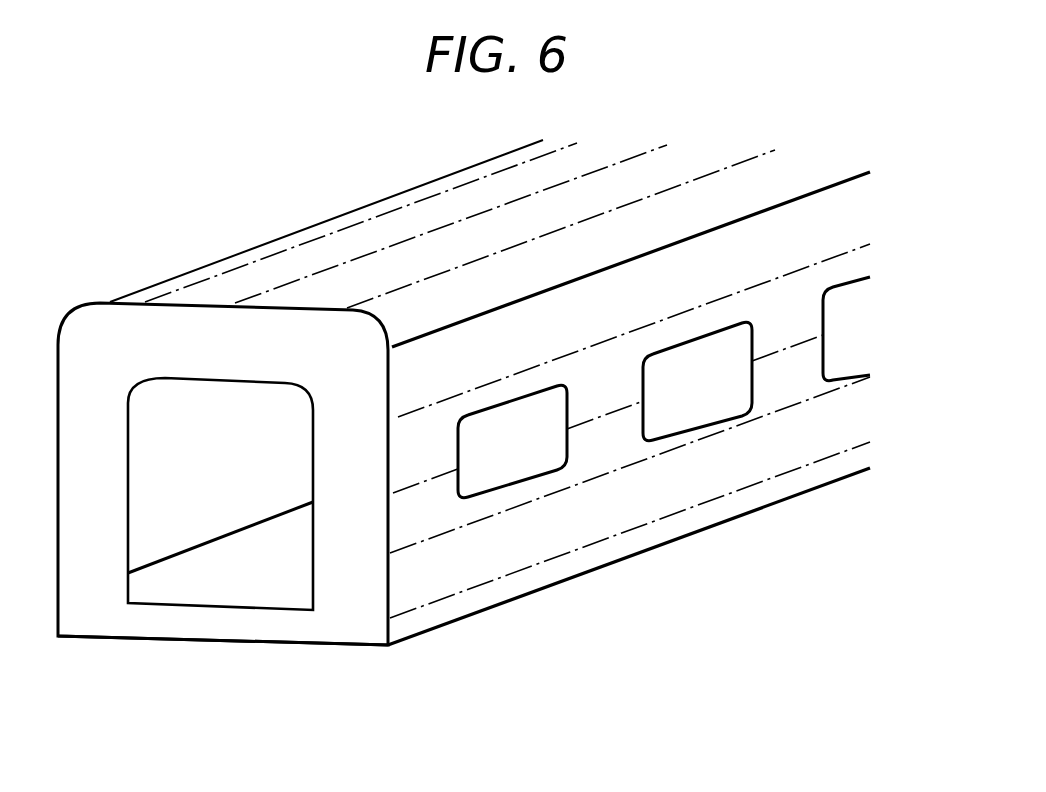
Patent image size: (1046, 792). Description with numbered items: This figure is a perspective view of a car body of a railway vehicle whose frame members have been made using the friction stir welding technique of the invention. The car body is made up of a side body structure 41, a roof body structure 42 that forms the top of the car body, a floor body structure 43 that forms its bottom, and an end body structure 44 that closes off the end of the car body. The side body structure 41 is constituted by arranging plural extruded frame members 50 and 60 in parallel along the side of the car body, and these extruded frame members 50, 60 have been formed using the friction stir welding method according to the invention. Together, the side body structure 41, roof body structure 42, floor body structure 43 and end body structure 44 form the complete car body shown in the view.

The side body structure 41 is at (558, 600).
The roof body structure 42 is at (357, 241).
The floor body structure 43 is at (202, 668).
The end body structure 44 is at (358, 627).
The extruded frame member 50 is at (655, 505).
The extruded frame member 60 is at (785, 398).